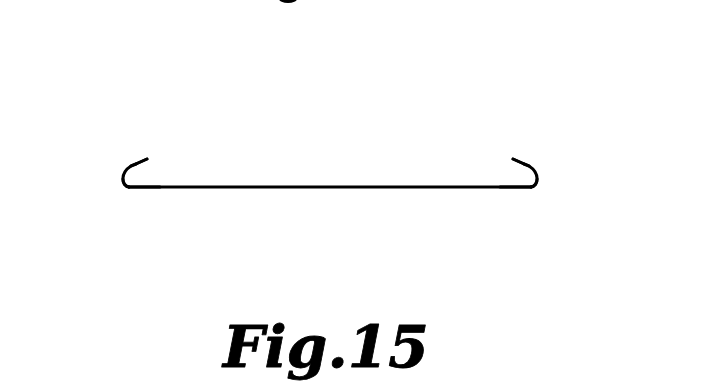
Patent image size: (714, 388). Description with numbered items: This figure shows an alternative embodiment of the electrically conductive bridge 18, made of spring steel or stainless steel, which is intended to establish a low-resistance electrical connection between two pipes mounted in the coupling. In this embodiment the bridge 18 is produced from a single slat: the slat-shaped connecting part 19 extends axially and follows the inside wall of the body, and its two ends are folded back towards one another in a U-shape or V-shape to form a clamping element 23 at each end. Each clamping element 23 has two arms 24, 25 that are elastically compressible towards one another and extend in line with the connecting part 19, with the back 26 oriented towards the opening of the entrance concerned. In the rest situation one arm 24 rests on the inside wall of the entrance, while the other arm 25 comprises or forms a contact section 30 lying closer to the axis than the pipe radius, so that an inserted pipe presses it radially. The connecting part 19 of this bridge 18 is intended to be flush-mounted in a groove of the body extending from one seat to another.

The bridge 18 is at (332, 115).
The connecting part 19 is at (353, 186).
The clamping element 23 is at (138, 125).
The arm 24 is at (153, 187).
The arm 25 is at (140, 164).
The back 26 is at (127, 190).
The contact section 30 is at (140, 164).